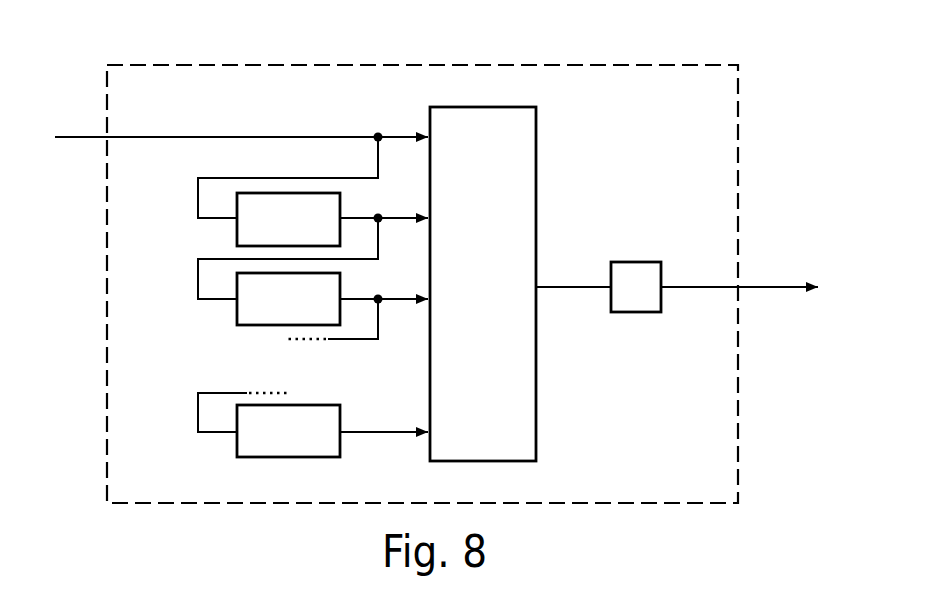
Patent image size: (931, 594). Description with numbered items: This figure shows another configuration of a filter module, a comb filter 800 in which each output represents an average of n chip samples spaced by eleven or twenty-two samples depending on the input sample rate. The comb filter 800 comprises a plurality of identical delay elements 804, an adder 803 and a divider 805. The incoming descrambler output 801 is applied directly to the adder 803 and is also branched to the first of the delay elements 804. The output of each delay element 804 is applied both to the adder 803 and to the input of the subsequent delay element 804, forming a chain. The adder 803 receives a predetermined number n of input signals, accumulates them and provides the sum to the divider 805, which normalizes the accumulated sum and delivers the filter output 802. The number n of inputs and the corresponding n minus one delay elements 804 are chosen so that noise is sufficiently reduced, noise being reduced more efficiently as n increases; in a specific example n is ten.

The comb filter 800 is at (738, 90).
The descrambler output 801 is at (70, 136).
The output signal line 802 is at (785, 285).
The adder 803 is at (536, 140).
The delay element 804 is at (237, 236).
The divider 805 is at (636, 312).